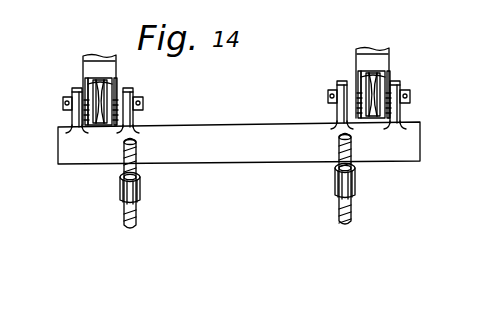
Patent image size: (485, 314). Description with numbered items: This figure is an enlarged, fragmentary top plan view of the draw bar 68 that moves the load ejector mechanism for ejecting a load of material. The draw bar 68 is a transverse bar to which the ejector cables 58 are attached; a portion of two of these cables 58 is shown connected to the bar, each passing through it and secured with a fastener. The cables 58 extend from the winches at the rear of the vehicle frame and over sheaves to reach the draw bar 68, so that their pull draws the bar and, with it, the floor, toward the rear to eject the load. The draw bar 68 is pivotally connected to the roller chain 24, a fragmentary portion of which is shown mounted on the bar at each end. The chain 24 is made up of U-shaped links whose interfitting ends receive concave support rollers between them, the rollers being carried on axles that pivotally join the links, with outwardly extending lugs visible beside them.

The roller chain 24 is at (103, 70).
The cables 58 is at (346, 224).
The draw bar 68 is at (392, 152).